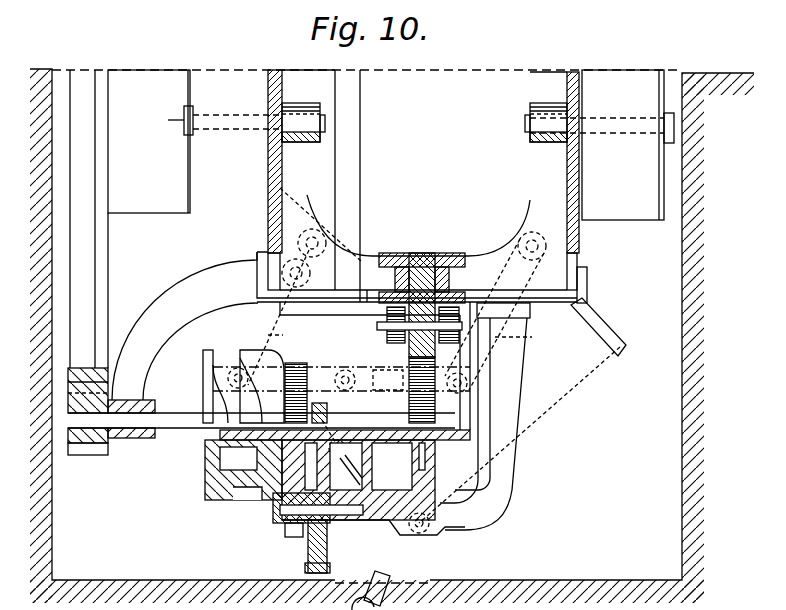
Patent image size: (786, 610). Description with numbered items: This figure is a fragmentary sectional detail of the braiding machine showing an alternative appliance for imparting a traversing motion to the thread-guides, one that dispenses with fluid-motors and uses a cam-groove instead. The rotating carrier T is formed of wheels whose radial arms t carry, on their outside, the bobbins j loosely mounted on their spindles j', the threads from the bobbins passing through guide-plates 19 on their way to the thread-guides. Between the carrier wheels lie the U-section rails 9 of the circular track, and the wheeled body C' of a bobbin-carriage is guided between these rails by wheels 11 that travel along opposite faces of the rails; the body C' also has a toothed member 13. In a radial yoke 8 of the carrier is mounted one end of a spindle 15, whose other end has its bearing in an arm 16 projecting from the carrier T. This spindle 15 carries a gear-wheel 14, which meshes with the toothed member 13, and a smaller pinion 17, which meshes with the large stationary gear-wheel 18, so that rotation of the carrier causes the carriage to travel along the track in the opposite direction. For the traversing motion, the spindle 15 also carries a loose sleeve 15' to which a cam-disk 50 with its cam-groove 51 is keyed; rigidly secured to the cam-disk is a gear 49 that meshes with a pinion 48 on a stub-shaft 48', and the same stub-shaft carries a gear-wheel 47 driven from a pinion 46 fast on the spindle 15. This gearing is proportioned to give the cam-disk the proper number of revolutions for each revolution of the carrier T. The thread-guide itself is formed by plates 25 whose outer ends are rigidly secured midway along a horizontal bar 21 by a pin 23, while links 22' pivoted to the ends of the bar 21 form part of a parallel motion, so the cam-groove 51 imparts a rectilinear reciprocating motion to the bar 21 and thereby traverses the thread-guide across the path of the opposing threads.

The carrier T is at (315, 80).
The bobbin spindle j' is at (391, 145).
The bobbin j is at (424, 186).
The radial arm t is at (308, 200).
The plate 25 is at (362, 132).
The gear-wheel 18 is at (100, 250).
The rail 9 is at (447, 253).
The wheeled body C' is at (451, 305).
The wheel 11 is at (378, 428).
The toothed member 13 is at (500, 357).
The arm 16 is at (185, 326).
The gear 49 is at (257, 350).
The cam-groove 51 is at (218, 384).
The pinion 46 is at (307, 375).
The pin 23 is at (332, 375).
The link 22' is at (416, 334).
The spindle 15 is at (261, 444).
The sleeve 15' is at (140, 433).
The pinion 17 is at (96, 452).
The cam-disk 50 is at (237, 490).
The horizontal bar 21 is at (371, 466).
The gear-wheel 14 is at (430, 460).
The stub-shaft 48' is at (279, 528).
The pinion 48 is at (309, 536).
The gear-wheel 47 is at (326, 552).
The yoke 8 is at (500, 433).
The guide-plate 19 is at (609, 318).